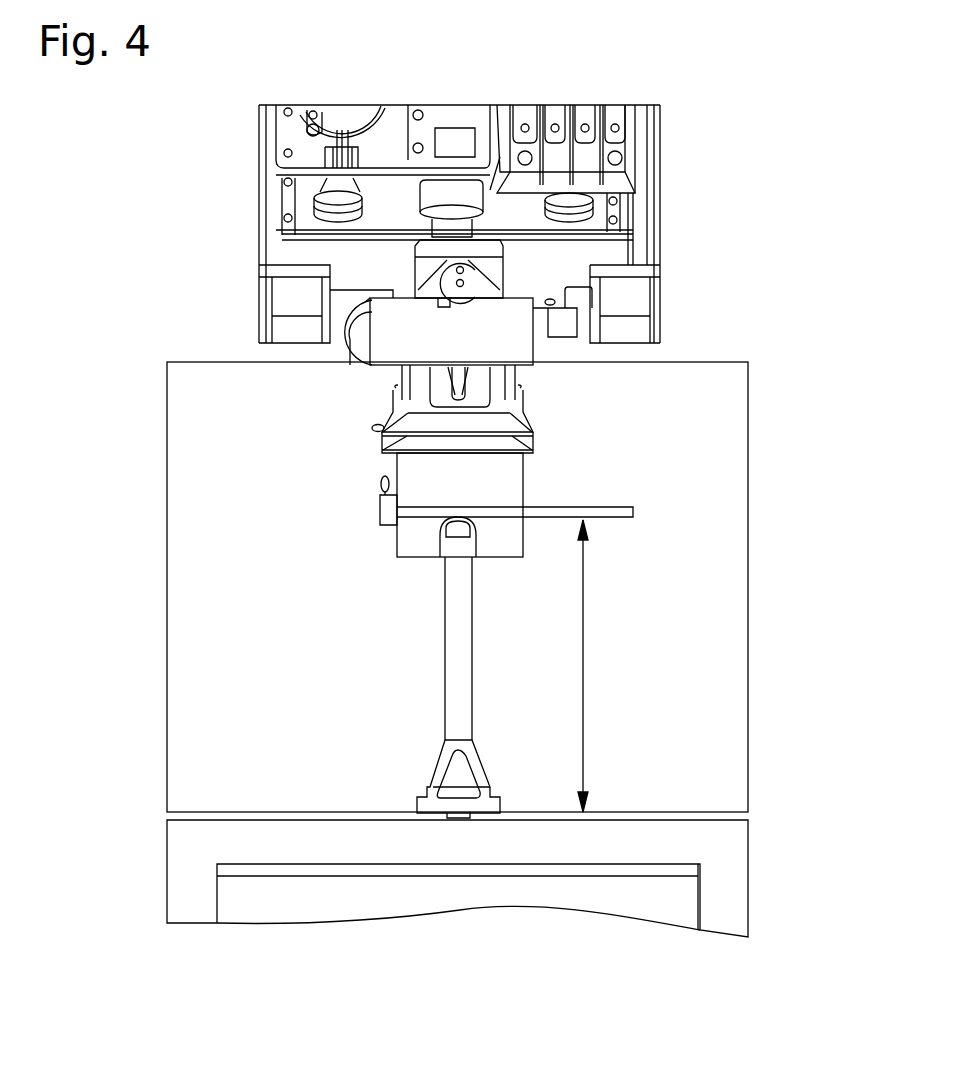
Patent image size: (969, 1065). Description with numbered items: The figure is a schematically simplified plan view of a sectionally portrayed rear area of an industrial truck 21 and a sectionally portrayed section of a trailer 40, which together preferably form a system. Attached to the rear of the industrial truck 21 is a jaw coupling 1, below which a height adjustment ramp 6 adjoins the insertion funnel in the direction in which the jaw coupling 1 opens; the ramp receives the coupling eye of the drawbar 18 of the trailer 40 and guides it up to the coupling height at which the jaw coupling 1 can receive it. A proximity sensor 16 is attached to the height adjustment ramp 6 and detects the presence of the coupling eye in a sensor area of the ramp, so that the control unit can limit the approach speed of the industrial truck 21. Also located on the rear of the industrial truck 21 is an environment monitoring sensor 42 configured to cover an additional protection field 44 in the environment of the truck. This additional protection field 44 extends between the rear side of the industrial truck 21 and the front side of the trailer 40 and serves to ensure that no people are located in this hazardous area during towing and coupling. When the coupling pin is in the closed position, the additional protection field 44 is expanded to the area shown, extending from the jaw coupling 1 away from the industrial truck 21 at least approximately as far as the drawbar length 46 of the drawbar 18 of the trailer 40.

The jaw coupling 1 is at (458, 373).
The height adjustment ramp 6 is at (500, 487).
The proximity sensor 16 is at (390, 511).
The drawbar 18 is at (456, 667).
The industrial truck 21 is at (657, 220).
The trailer 40 is at (732, 887).
The environment monitoring sensor 42 is at (563, 326).
The additional protection field 44 is at (748, 672).
The drawbar length 46 is at (583, 648).